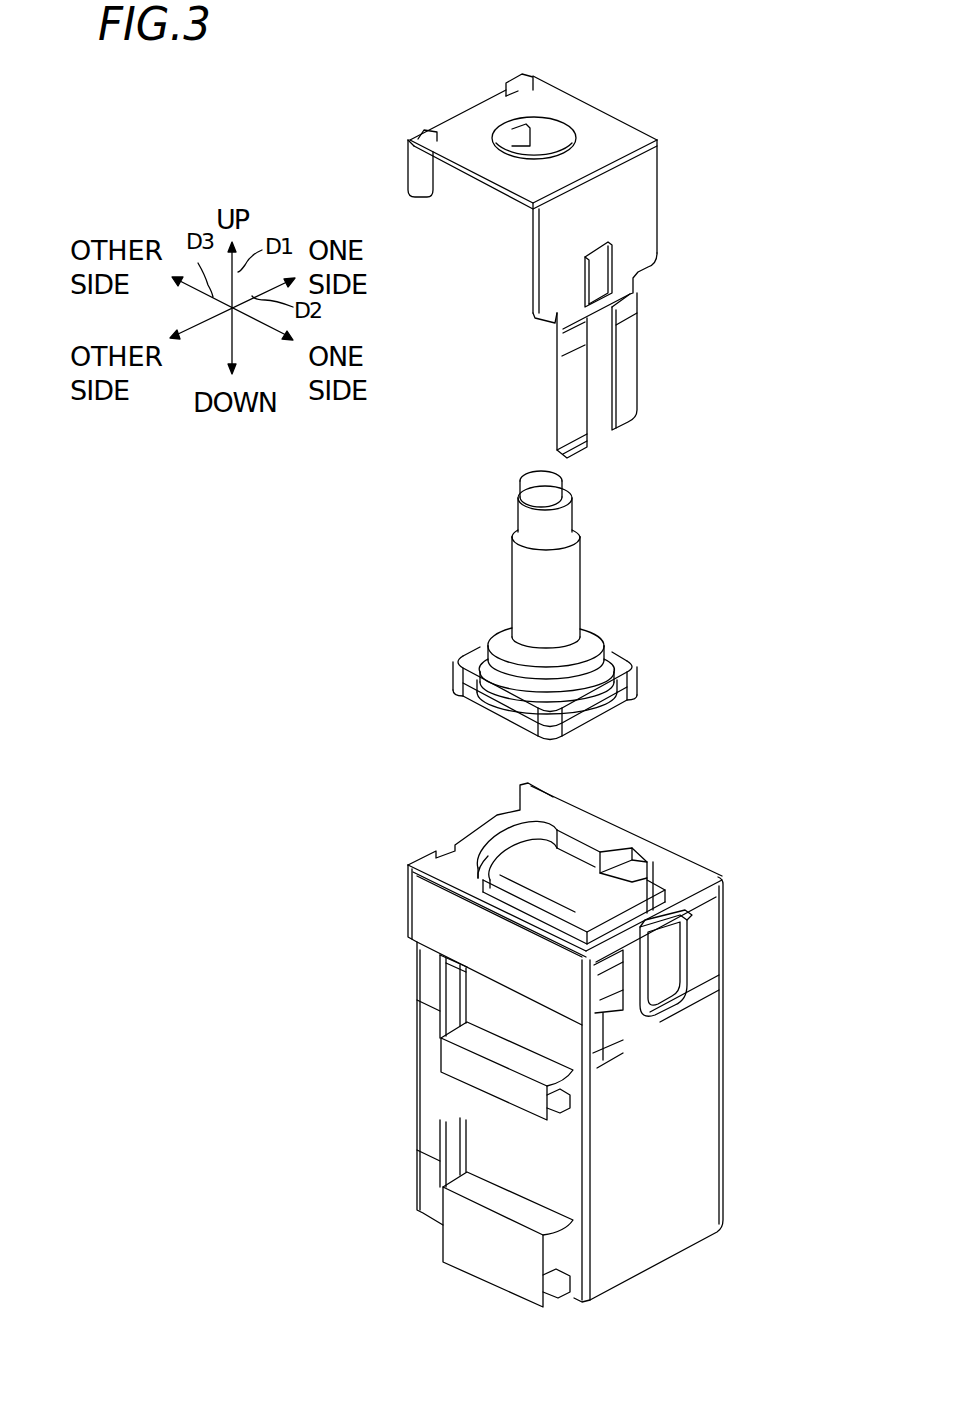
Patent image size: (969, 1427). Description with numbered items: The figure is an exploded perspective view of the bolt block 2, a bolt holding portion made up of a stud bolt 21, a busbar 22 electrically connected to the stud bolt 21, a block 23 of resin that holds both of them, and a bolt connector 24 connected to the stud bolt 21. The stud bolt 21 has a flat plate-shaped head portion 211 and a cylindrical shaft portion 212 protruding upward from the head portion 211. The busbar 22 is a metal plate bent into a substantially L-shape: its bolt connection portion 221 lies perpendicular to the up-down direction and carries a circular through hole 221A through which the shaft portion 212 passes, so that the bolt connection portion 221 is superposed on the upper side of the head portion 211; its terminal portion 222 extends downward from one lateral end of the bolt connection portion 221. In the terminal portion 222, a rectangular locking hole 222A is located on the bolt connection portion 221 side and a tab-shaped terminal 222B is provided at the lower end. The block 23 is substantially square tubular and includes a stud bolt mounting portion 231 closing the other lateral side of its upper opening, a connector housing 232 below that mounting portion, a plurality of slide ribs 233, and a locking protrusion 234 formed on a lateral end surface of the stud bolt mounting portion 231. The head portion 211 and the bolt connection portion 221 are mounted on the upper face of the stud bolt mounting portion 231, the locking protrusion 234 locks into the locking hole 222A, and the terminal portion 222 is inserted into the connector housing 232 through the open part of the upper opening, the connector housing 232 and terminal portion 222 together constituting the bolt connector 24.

The bolt block 2 is at (715, 111).
The stud bolt 21 is at (592, 570).
The head portion 211 is at (490, 708).
The shaft portion 212 is at (533, 587).
The busbar 22 is at (668, 204).
The bolt connection portion 221 is at (598, 115).
The through hole 221A is at (538, 107).
The terminal portion 222 is at (555, 285).
The locking hole 222A is at (626, 280).
The tab-shaped terminal 222B is at (628, 370).
The block 23 is at (736, 1050).
The stud bolt mounting portion 231 is at (597, 910).
The connector housing 232 is at (660, 1150).
The slide ribs 233 is at (490, 1078).
The locking protrusion 234 is at (610, 988).
The bolt connector 24 is at (242, 965).